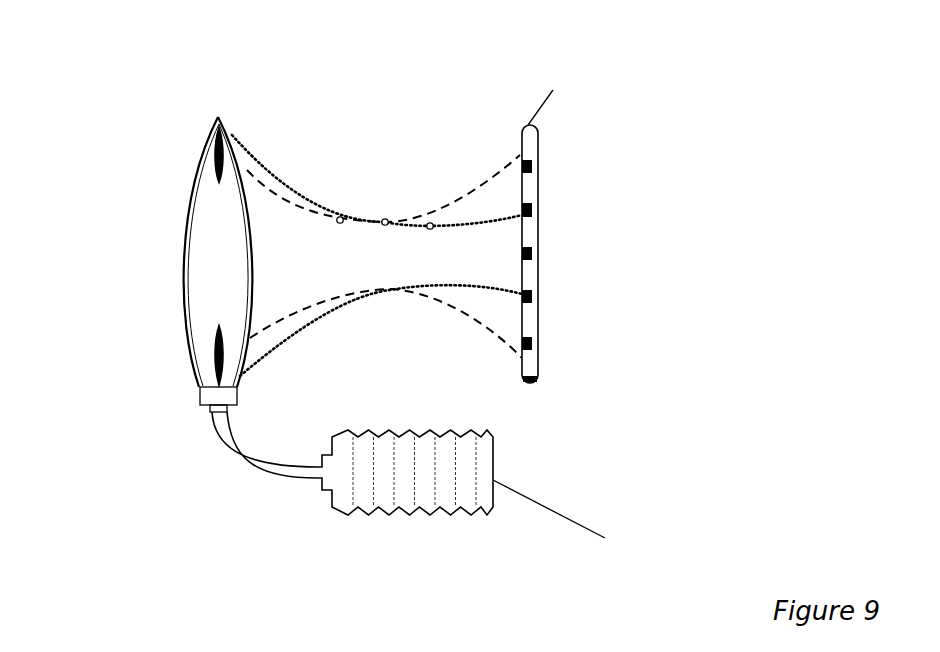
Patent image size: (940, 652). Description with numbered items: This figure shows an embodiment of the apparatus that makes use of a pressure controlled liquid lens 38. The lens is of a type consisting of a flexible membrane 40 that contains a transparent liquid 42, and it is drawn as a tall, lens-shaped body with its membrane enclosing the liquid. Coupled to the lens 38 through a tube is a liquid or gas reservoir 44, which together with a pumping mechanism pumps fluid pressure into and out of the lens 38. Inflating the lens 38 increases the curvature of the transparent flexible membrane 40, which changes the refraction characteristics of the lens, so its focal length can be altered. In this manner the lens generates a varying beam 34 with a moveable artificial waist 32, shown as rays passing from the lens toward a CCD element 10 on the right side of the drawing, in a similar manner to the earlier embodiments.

The pressure controlled liquid lens 38 is at (197, 150).
The transparent liquid 42 is at (184, 217).
The flexible membrane 40 is at (184, 289).
The artificial waist 32 is at (430, 222).
The varying beam 34 is at (385, 217).
The CCD image sensor 10 is at (538, 170).
The liquid or gas reservoir 44 is at (493, 455).